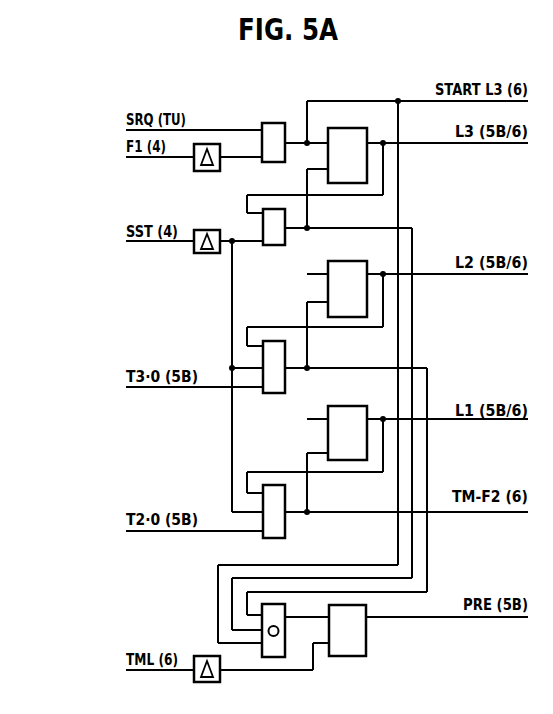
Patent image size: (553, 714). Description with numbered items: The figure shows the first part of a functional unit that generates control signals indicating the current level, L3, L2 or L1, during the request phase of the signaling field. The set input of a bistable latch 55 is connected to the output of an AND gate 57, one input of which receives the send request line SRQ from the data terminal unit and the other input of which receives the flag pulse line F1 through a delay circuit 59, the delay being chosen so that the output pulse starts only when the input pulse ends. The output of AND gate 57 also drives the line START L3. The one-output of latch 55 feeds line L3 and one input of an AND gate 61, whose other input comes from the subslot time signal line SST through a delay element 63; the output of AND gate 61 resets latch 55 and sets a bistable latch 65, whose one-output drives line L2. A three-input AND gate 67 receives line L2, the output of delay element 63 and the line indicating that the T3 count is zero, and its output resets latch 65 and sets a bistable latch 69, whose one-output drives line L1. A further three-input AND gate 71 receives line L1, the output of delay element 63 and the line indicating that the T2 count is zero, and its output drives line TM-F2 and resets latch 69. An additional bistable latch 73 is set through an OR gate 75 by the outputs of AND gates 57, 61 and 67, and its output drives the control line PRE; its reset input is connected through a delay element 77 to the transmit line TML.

The bistable latch 55 is at (343, 128).
The AND gate 57 is at (271, 107).
The delay circuit 59 is at (200, 171).
The AND gate 61 is at (268, 245).
The delay element 63 is at (200, 253).
The bistable latch 65 is at (343, 261).
The AND gate 67 is at (268, 393).
The bistable latch 69 is at (343, 406).
The AND gate 71 is at (268, 538).
The bistable latch 73 is at (340, 656).
The OR gate 75 is at (285, 626).
The delay element 77 is at (208, 656).